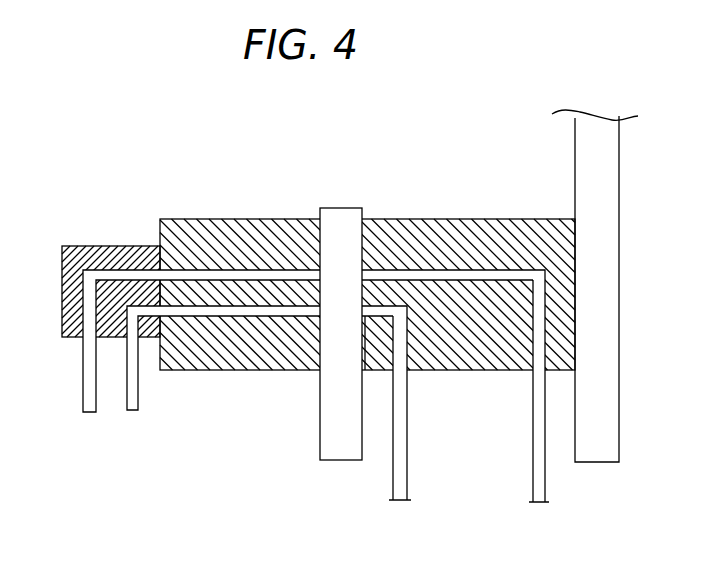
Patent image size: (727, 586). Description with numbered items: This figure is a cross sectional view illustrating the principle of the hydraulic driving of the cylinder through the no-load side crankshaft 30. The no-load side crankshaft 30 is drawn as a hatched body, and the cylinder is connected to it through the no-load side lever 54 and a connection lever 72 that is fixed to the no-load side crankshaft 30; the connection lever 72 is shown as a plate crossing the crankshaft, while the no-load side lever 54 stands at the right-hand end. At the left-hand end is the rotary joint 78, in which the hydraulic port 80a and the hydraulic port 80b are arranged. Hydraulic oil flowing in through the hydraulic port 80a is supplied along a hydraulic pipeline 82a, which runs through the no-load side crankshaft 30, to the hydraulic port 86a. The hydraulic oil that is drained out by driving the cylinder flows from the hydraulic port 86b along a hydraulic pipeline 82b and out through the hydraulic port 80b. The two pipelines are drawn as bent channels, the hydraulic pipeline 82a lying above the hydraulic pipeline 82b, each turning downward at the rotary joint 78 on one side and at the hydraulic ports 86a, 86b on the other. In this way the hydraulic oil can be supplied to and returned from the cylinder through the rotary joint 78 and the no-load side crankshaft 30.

The no-load side crankshaft 30 is at (477, 234).
The no-load side lever 54 is at (600, 457).
The connection lever 72 is at (340, 214).
The rotary joint 78 is at (100, 246).
The hydraulic port 80a is at (83, 387).
The hydraulic port 80b is at (133, 411).
The hydraulic pipeline 82a is at (400, 278).
The hydraulic pipeline 82b is at (378, 313).
The hydraulic port 86a is at (533, 436).
The hydraulic port 86b is at (407, 478).